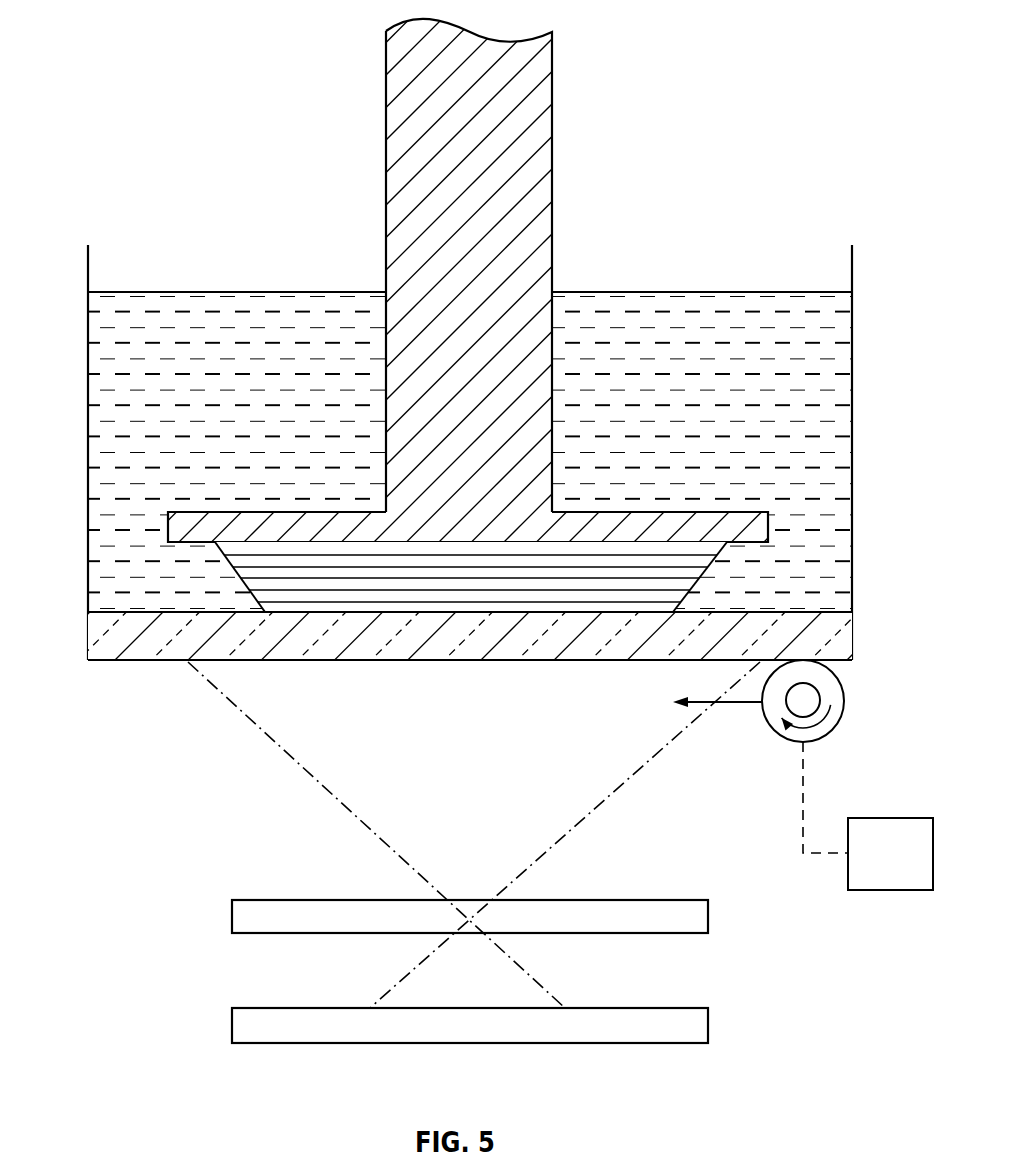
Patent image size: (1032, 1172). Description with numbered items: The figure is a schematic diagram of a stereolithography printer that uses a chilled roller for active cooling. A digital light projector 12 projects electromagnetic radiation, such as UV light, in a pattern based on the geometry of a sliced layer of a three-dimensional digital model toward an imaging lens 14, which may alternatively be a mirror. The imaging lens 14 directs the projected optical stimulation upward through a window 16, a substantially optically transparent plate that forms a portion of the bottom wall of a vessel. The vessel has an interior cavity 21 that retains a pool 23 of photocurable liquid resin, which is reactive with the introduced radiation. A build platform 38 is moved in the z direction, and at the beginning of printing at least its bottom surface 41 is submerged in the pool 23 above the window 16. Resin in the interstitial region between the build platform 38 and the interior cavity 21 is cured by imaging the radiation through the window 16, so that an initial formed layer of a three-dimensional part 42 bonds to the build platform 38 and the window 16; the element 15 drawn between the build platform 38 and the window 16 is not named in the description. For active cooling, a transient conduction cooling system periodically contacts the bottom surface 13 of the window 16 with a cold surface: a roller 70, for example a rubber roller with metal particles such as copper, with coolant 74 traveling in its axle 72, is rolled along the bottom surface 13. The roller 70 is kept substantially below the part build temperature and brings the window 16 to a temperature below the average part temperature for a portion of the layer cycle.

The digital light projector 12 is at (708, 1022).
The bottom surface 13 is at (115, 662).
The imaging lens 14 is at (708, 912).
The light beam 15 is at (110, 610).
The window 16 is at (100, 648).
The interior cavity 21 is at (88, 400).
The pool 23 is at (103, 340).
The build platform 38 is at (727, 543).
The bottom surface 41 is at (737, 545).
The 3D part 42 is at (492, 607).
The roller 70 is at (795, 740).
The axle 72 is at (806, 705).
The coolant 74 is at (888, 890).